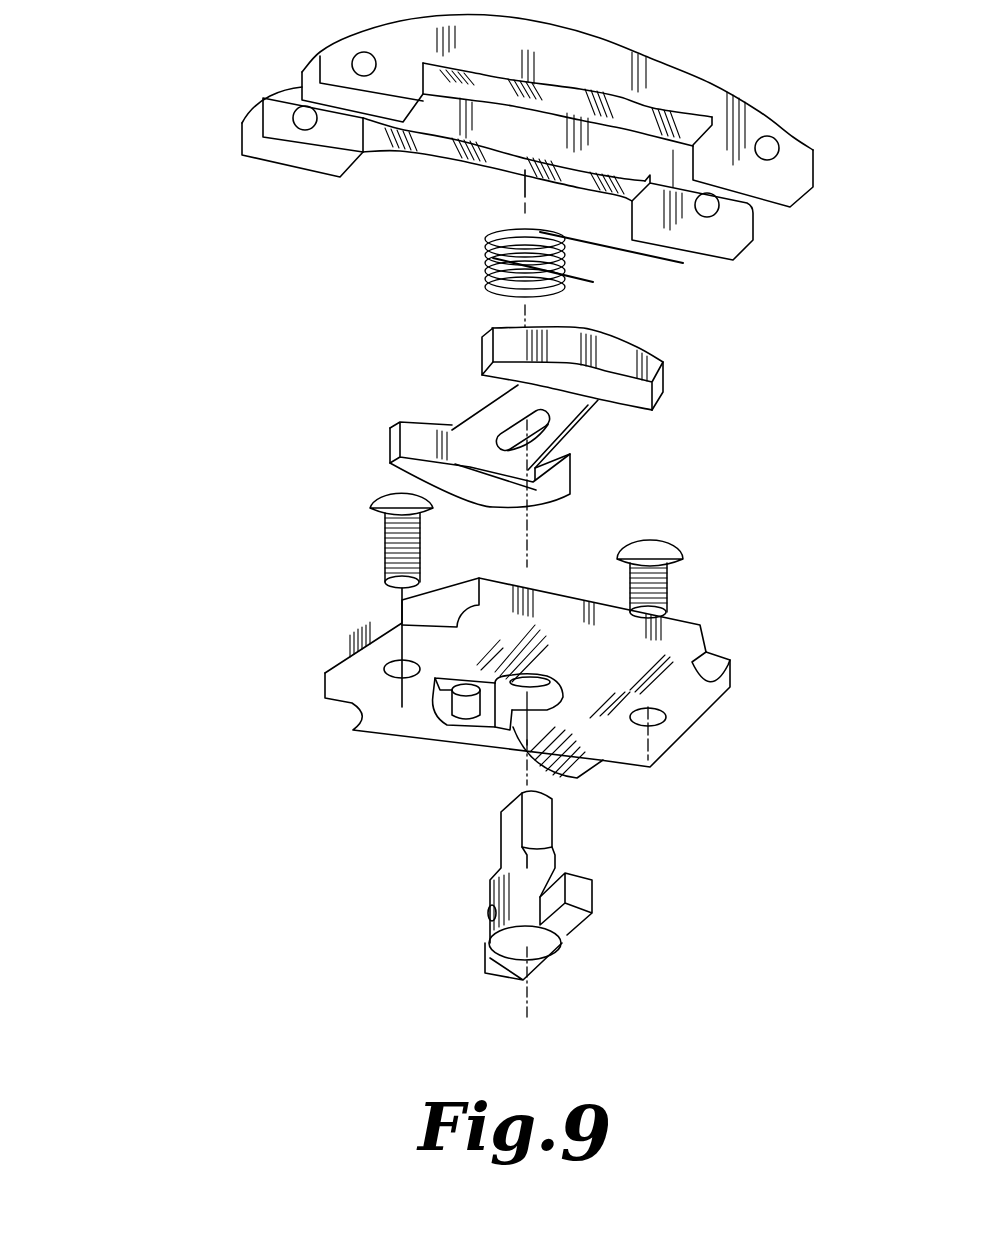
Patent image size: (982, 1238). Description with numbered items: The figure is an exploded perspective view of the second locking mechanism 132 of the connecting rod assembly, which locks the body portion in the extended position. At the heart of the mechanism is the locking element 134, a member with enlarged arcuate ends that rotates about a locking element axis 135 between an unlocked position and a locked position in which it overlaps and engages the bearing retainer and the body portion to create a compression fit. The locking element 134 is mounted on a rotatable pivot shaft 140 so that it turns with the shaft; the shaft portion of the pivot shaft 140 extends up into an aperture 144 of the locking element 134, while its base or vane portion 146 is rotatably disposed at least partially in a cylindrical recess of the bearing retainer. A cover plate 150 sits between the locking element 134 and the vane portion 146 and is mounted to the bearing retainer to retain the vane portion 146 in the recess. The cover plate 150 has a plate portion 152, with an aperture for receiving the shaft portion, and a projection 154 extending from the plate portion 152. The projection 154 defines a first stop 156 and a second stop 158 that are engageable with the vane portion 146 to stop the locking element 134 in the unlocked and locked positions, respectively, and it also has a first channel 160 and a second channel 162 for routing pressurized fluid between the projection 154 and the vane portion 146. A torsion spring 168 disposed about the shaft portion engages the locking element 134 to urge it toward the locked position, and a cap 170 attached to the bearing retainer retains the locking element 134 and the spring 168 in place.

The second locking mechanism 132 is at (222, 290).
The cap 170 is at (703, 70).
The torsion spring 168 is at (483, 267).
The locking element 134 is at (657, 385).
The aperture 144 is at (553, 445).
The locking element axis 135 is at (527, 530).
The cover plate 150 is at (725, 695).
The plate portion 152 is at (677, 742).
The projection 154 is at (437, 730).
The first stop 156 is at (437, 697).
The second stop 158 is at (573, 767).
The first channel 160 is at (463, 693).
The second channel 162 is at (493, 744).
The pivot shaft 140 is at (552, 832).
The vane portion 146 is at (587, 897).